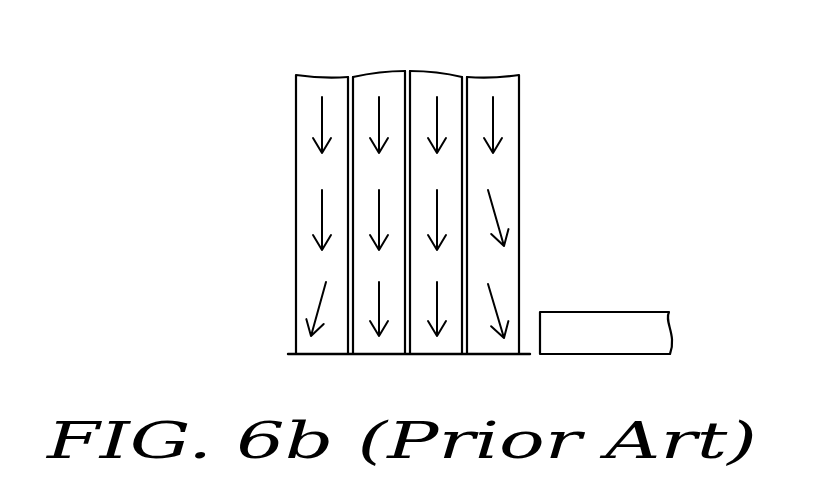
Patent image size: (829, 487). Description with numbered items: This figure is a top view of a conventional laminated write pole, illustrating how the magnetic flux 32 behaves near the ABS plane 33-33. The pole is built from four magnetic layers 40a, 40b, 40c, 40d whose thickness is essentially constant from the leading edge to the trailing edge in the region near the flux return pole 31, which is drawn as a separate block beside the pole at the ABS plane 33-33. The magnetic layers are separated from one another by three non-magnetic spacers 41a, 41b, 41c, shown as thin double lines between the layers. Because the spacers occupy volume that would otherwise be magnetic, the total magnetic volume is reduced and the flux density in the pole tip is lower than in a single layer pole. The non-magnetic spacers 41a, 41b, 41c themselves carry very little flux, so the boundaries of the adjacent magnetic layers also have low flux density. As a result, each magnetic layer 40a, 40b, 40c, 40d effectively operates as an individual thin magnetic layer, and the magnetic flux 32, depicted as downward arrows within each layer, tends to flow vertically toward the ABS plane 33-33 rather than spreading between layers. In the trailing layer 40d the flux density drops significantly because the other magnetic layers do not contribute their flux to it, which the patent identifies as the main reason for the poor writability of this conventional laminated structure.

The flux return pole 31 is at (604, 322).
The magnetic flux 32 is at (322, 216).
The ABS plane 33 is at (278, 354).
The magnetic layer 40a is at (313, 101).
The magnetic layer 40b is at (378, 354).
The magnetic layer 40c is at (437, 354).
The trailing layer 40d is at (503, 101).
The non-magnetic spacer 41a is at (348, 76).
The non-magnetic spacer 41b is at (406, 71).
The non-magnetic spacer 41c is at (468, 76).